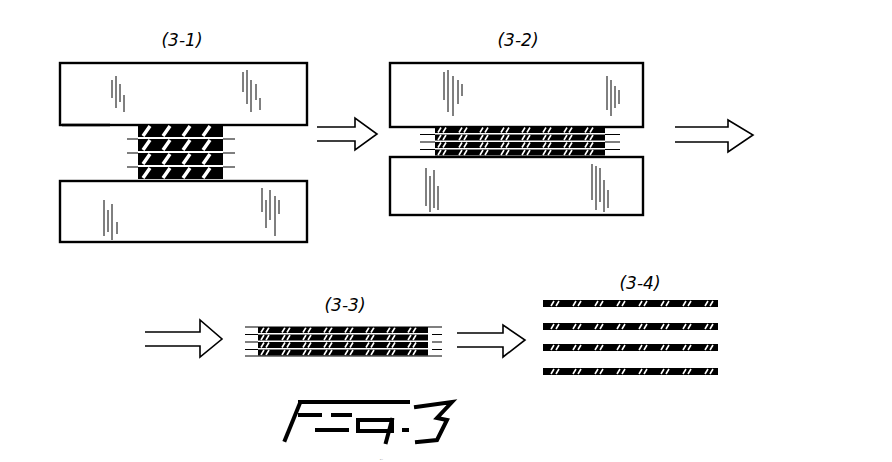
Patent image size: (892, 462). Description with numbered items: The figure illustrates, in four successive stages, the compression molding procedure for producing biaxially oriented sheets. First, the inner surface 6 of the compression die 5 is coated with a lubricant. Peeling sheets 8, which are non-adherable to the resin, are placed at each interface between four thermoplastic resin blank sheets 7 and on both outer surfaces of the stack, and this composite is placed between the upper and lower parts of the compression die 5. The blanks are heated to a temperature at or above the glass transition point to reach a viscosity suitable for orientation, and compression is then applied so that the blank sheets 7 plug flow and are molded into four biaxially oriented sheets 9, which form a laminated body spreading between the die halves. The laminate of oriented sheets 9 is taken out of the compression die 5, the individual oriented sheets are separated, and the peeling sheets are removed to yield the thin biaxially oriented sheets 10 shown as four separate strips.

The compression die 5 is at (253, 70).
The inner surface 6 is at (78, 125).
The thermoplastic resin blank sheets 7 is at (225, 172).
The peeling sheets 8 is at (135, 165).
The biaxially oriented sheets 9 is at (575, 128).
The thin biaxially oriented sheets 10 is at (717, 303).